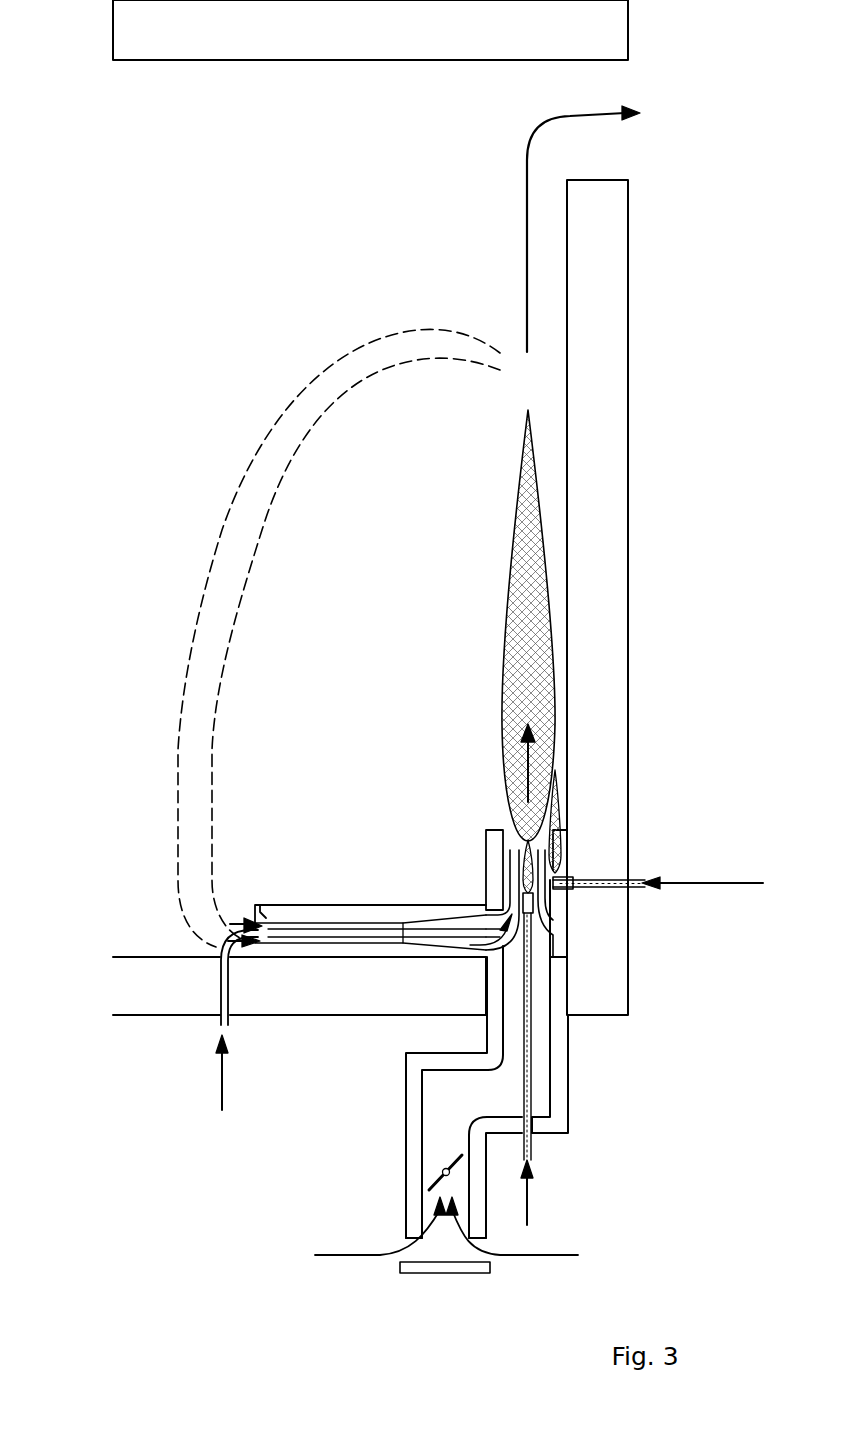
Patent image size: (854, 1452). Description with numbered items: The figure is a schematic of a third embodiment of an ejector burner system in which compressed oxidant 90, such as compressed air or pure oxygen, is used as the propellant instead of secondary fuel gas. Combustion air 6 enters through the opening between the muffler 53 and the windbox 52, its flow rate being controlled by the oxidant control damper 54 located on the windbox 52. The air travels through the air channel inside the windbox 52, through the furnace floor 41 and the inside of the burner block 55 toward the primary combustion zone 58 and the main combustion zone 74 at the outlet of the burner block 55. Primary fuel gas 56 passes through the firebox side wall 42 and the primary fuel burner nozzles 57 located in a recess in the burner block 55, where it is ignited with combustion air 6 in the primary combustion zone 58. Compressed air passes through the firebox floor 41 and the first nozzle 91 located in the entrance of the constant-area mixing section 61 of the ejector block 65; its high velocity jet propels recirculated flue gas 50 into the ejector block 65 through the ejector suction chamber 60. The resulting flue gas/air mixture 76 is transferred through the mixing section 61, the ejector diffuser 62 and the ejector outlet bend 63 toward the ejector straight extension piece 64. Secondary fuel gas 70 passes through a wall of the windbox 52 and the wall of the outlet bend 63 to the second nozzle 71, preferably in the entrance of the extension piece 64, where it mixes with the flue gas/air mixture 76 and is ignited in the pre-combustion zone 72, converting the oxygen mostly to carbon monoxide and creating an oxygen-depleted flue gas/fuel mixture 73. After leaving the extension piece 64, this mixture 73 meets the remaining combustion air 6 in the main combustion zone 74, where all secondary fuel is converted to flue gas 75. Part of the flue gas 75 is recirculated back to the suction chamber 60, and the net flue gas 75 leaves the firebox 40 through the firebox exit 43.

The firebox 40 is at (655, 35).
The furnace floor 41 is at (352, 993).
The firebox side wall 42 is at (628, 761).
The firebox exit 43 is at (611, 152).
The recirculated flue gas 50 is at (212, 745).
The windbox 52 is at (390, 1118).
The muffler 53 is at (445, 1267).
The oxidant control damper 54 is at (440, 1173).
The burner block 55 is at (490, 832).
The primary fuel gas 56 is at (739, 881).
The primary fuel burner nozzles 57 is at (562, 891).
The primary combustion zone 58 is at (558, 846).
The ejector suction chamber 60 is at (262, 905).
The constant-area mixing section 61 is at (352, 935).
The ejector diffuser 62 is at (432, 922).
The ejector outlet bend piece 63 is at (495, 912).
The ejector straight extension piece 64 is at (526, 866).
The ejector block 65 is at (305, 952).
The secondary fuel gas 70 is at (528, 1200).
The second nozzle 71 is at (535, 900).
The pre-combustion zone 72 is at (528, 890).
The oxygen-depleted flue gas/fuel mixture 73 is at (521, 757).
The main combustion zone 74 is at (524, 681).
The flue gas 75 is at (525, 221).
The flue gas/air mixture 76 is at (310, 935).
The compressed oxidant 90 is at (216, 1085).
The first nozzle 91 is at (245, 926).
The combustion air 6 is at (326, 1258).